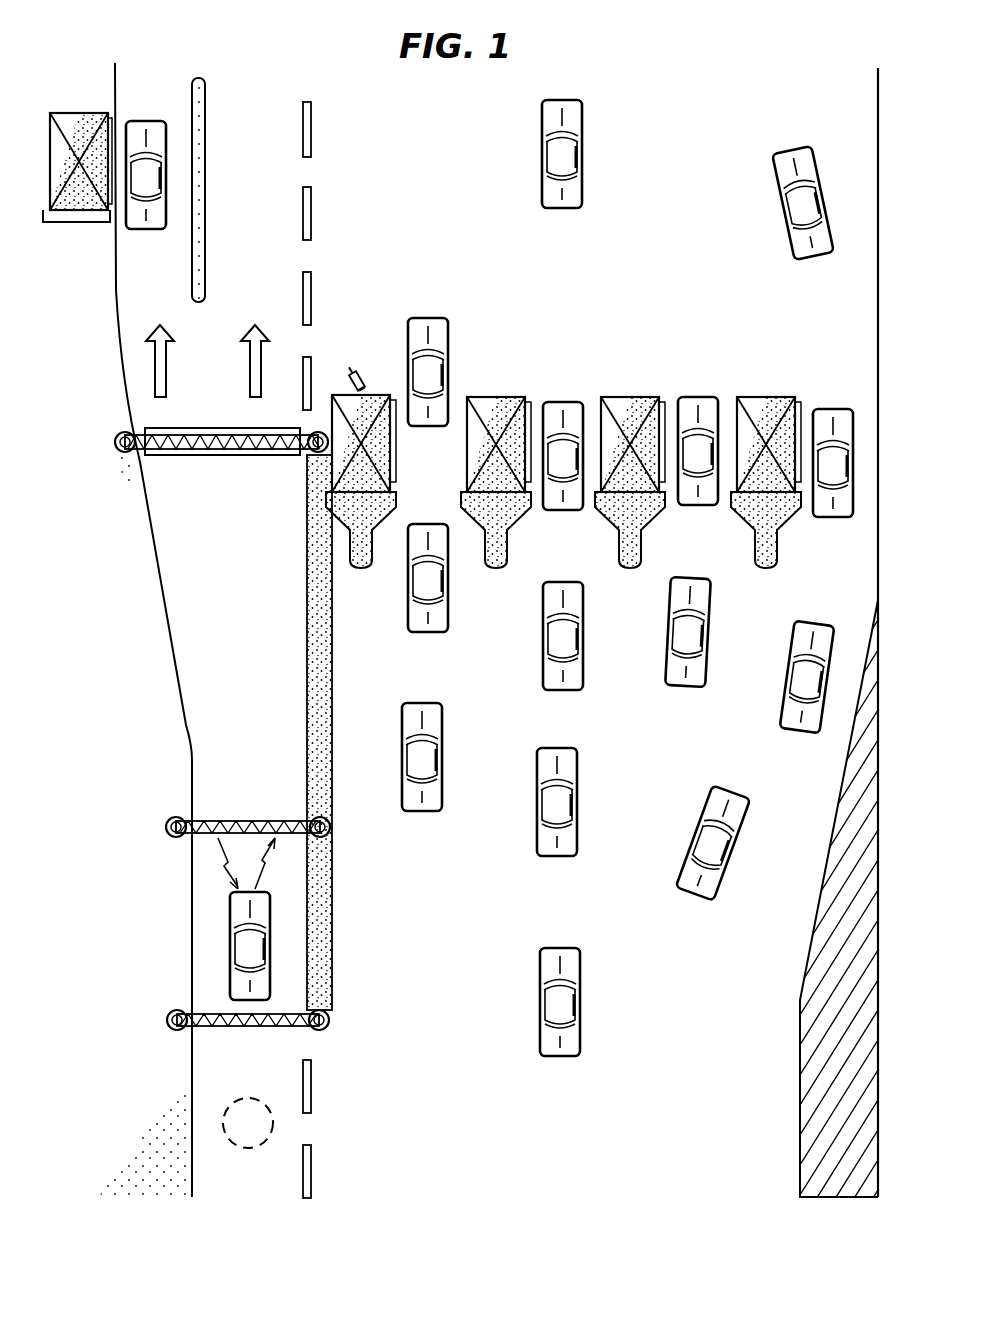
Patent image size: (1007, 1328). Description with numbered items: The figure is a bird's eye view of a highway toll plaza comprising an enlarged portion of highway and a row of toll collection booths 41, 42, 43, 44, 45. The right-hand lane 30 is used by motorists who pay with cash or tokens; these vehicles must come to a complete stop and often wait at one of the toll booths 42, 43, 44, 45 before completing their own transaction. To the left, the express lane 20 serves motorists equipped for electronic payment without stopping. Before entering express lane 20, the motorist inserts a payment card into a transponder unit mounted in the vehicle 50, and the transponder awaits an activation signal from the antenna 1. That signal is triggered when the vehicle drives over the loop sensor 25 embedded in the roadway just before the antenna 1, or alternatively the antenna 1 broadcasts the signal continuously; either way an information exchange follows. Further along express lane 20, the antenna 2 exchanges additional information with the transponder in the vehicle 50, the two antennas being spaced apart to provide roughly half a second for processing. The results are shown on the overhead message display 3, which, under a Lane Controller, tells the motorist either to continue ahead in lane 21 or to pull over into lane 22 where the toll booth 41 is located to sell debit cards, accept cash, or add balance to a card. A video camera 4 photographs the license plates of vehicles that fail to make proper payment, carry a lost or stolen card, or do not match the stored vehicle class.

The antenna 1 is at (248, 1030).
The antenna 2 is at (254, 820).
The message display 3 is at (224, 457).
The video camera 4 is at (353, 372).
The express lane 20 is at (234, 1188).
The lane 21 is at (243, 288).
The lane 22 is at (135, 288).
The loop sensor 25 is at (264, 1099).
The lane 30 is at (548, 1188).
The toll booth 41 is at (83, 113).
The toll booth 42 is at (380, 394).
The toll booth 43 is at (494, 397).
The toll booth 44 is at (631, 397).
The toll booth 45 is at (763, 397).
The vehicle 50 is at (229, 953).